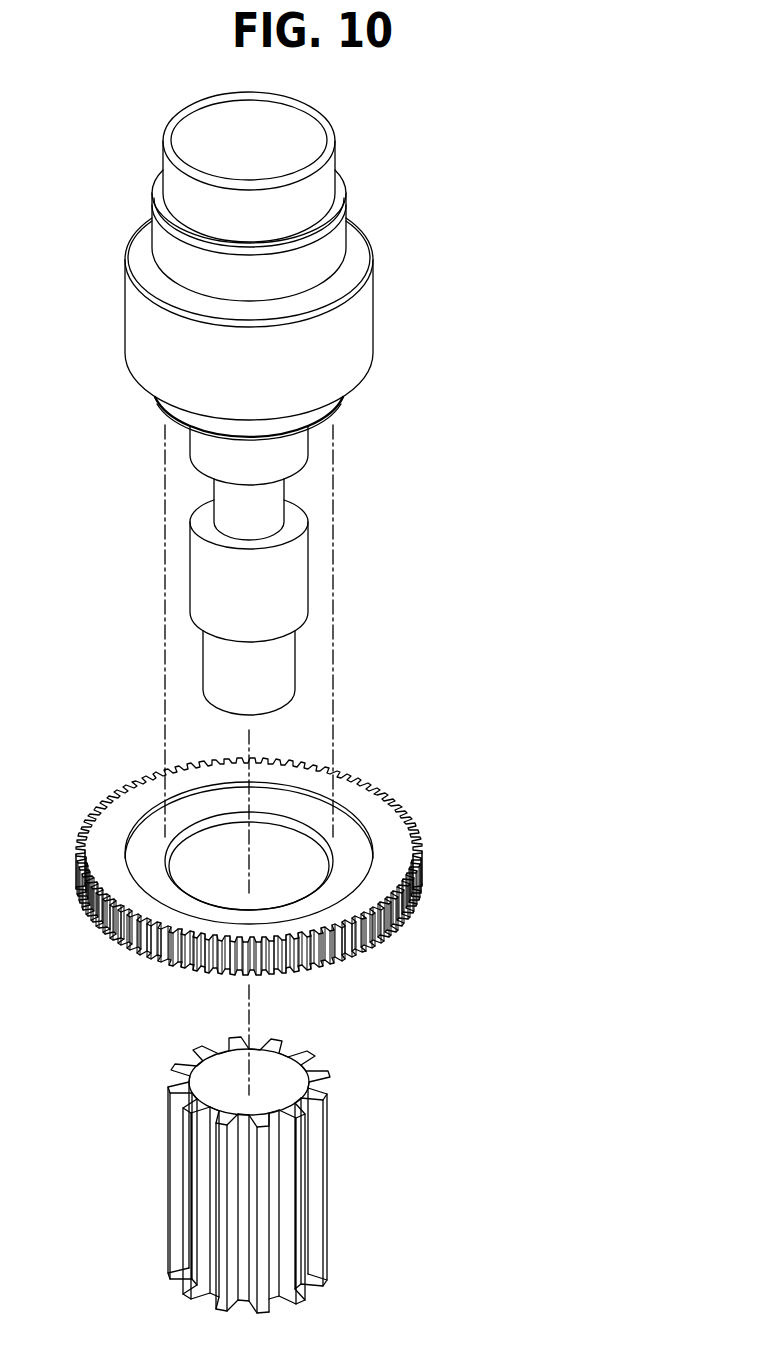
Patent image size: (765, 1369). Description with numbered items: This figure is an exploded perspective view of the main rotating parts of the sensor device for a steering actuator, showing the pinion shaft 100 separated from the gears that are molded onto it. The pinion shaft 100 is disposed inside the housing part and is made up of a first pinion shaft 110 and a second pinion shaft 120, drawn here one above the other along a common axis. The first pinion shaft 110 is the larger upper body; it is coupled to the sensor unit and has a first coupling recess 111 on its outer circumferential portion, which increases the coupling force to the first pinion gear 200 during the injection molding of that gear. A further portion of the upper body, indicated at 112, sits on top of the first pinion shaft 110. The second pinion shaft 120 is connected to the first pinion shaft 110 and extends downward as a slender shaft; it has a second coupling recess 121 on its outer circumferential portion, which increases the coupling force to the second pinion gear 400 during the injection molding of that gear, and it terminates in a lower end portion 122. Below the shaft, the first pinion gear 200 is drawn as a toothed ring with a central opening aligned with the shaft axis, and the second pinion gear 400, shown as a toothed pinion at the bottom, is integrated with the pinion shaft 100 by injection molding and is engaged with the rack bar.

The pinion shaft 100 is at (500, 338).
The first pinion shaft 110 is at (271, 272).
The first coupling recess 111 is at (180, 413).
The top cap of head body 112 is at (315, 192).
The second pinion shaft 120 is at (279, 570).
The second coupling recess 121 is at (232, 507).
The lower end portion of shaft 122 is at (225, 668).
The first pinion gear 200 is at (400, 865).
The second pinion gear 400 is at (307, 1167).